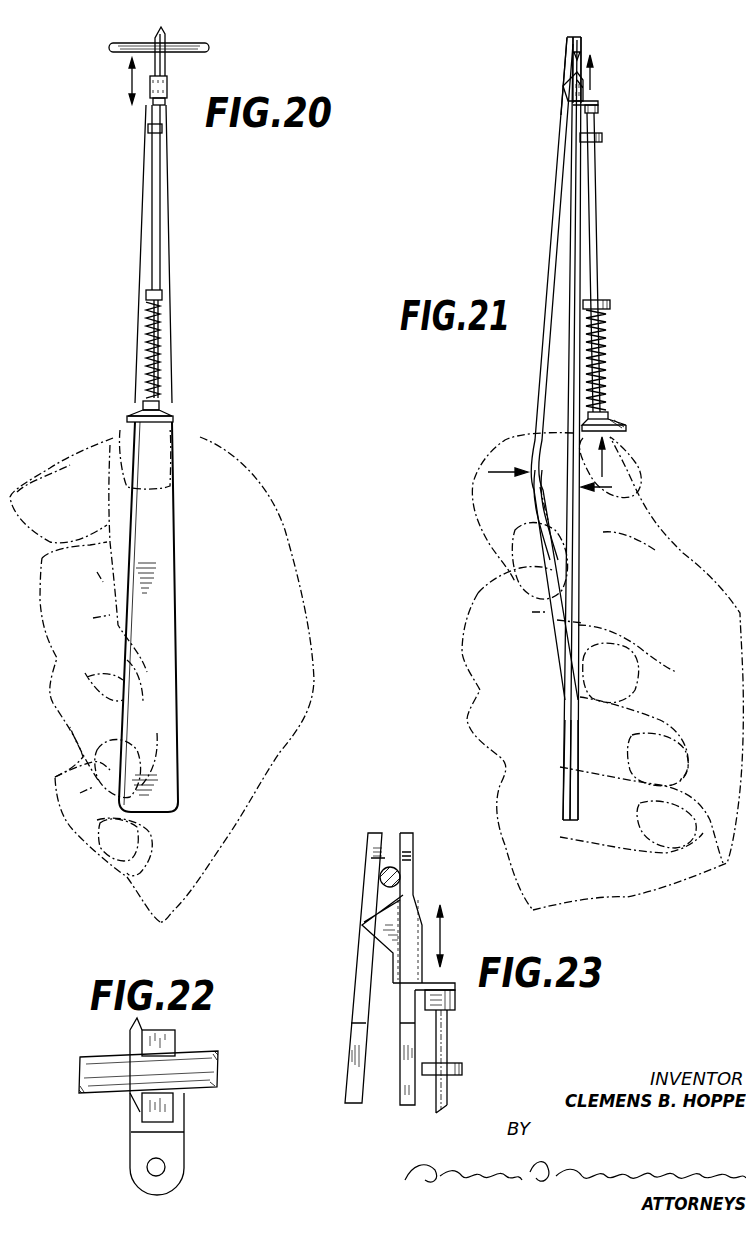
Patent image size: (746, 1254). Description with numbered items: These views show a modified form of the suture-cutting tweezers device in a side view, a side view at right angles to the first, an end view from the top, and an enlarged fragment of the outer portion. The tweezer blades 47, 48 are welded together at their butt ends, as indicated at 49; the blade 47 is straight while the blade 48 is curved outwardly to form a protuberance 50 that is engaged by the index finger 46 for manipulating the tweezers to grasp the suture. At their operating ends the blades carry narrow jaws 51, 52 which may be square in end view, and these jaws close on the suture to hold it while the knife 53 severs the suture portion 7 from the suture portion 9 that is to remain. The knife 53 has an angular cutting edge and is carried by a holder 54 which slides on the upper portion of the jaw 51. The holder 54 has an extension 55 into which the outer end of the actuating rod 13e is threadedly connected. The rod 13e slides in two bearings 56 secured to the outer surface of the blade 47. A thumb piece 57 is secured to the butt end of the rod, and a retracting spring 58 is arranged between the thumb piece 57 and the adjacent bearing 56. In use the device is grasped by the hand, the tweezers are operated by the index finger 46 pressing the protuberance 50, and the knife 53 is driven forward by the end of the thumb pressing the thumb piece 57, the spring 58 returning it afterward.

In FIG. 20, the suture portion 7 is at (159, 36).
In FIG. 22, the suture portion 7 is at (163, 1058).
In FIG. 20, the suture portion 9 is at (128, 44).
In FIG. 22, the suture portion 9 is at (218, 1076).
In FIG. 23, the suture portion 9 is at (400, 878).
In FIG. 21, the actuating rod 13e is at (598, 198).
In FIG. 23, the actuating rod 13e is at (448, 1094).
In FIG. 20, the index finger 46 is at (162, 675).
In FIG. 21, the index finger 46 is at (497, 531).
In FIG. 21, the tweezer blade 47 is at (582, 173).
In FIG. 21, the tweezer blade 48 is at (553, 211).
In FIG. 20, the welded butt ends 49 is at (170, 181).
In FIG. 21, the welded butt ends 49 is at (578, 773).
In FIG. 21, the protuberance 50 is at (533, 492).
In FIG. 20, the jaw 51 is at (166, 58).
In FIG. 21, the jaw 51 is at (583, 53).
In FIG. 22, the jaw 51 is at (173, 1104).
In FIG. 23, the jaw 51 is at (415, 898).
In FIG. 21, the jaw 52 is at (566, 60).
In FIG. 22, the jaw 52 is at (176, 1040).
In FIG. 23, the jaw 52 is at (360, 978).
In FIG. 20, the knife 53 is at (150, 68).
In FIG. 21, the knife 53 is at (565, 90).
In FIG. 22, the knife 53 is at (130, 1034).
In FIG. 23, the knife 53 is at (390, 920).
In FIG. 20, the holder 54 is at (158, 90).
In FIG. 21, the holder 54 is at (598, 101).
In FIG. 22, the holder 54 is at (184, 1127).
In FIG. 23, the holder 54 is at (425, 977).
In FIG. 21, the extension 55 is at (598, 109).
In FIG. 23, the extension 55 is at (456, 993).
In FIG. 20, the bearings 56 is at (148, 130).
In FIG. 21, the bearings 56 is at (603, 137).
In FIG. 21, the thumb piece 57 is at (614, 421).
In FIG. 20, the retracting spring 58 is at (162, 342).
In FIG. 21, the retracting spring 58 is at (607, 356).